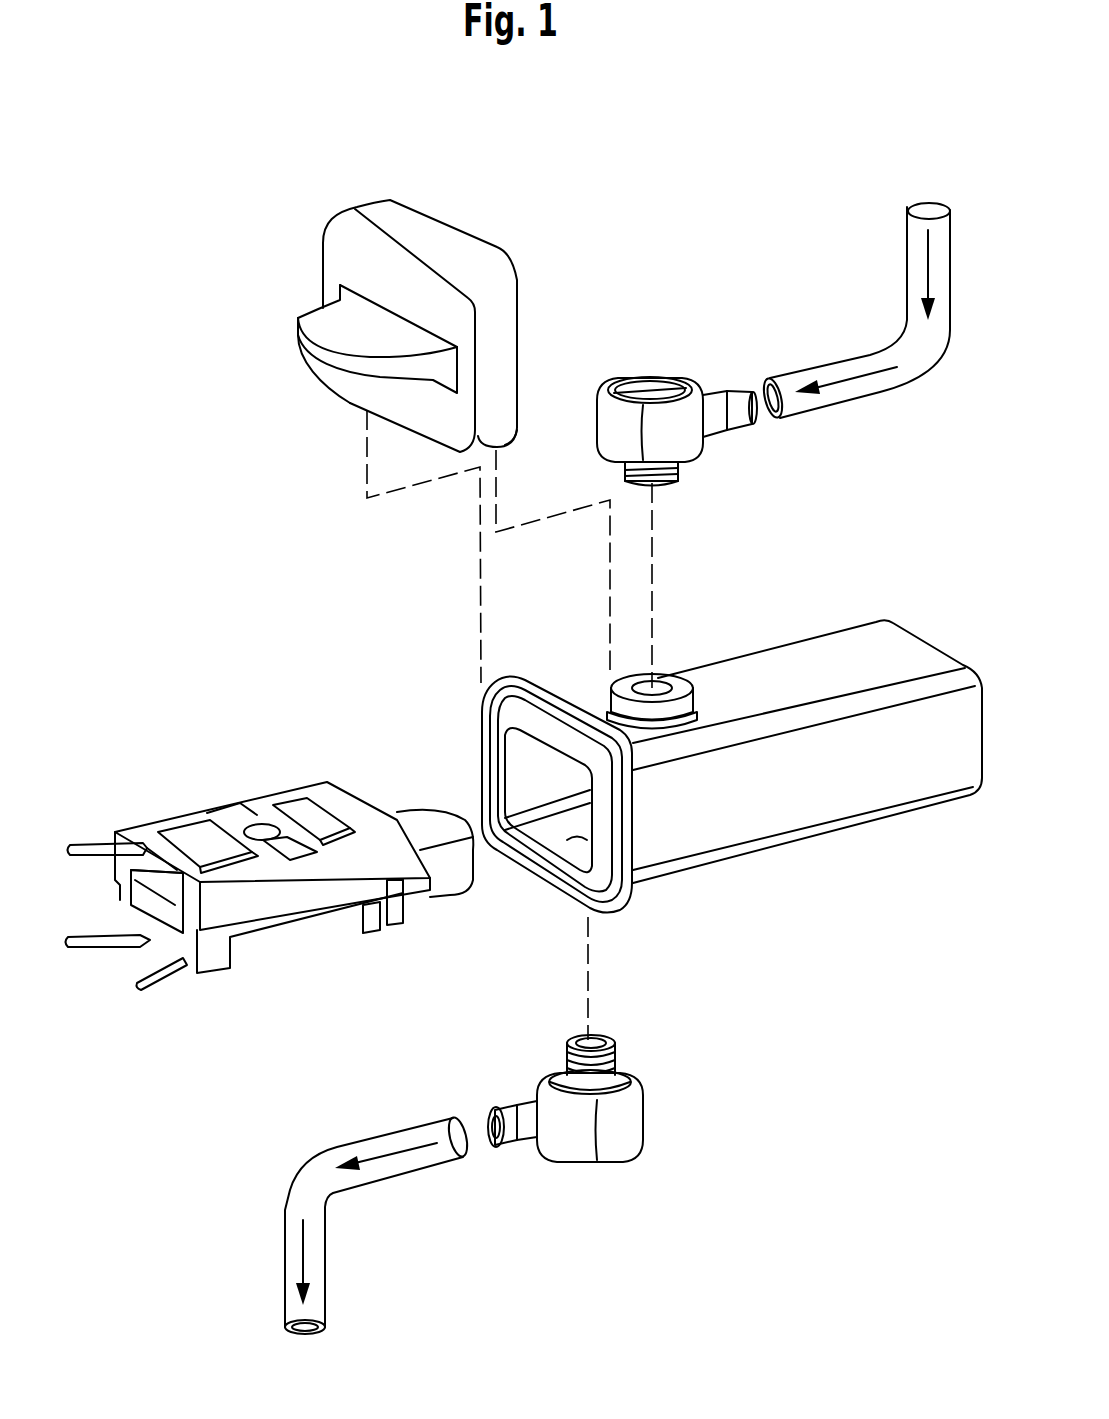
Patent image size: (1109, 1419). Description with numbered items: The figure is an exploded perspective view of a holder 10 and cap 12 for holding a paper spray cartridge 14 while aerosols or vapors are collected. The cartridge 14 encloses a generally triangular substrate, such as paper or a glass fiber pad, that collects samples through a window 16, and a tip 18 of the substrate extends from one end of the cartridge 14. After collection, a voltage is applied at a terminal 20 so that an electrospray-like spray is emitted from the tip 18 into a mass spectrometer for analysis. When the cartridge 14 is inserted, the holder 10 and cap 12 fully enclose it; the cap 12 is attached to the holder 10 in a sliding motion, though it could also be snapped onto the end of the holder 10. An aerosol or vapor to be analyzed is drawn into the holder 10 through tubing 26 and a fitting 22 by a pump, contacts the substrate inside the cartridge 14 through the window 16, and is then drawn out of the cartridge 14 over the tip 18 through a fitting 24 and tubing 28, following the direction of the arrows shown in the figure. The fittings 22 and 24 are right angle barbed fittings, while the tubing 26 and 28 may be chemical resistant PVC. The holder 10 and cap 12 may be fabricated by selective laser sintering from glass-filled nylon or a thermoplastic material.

The holder 10 is at (853, 813).
The cap 12 is at (333, 260).
The paper spray cartridge 14 is at (295, 807).
The window 16 is at (190, 830).
The tip 18 is at (167, 900).
The terminal 20 is at (277, 838).
The fitting 22 is at (623, 375).
The fitting 24 is at (627, 1113).
The tubing 26 is at (825, 362).
The tubing 28 is at (427, 1167).